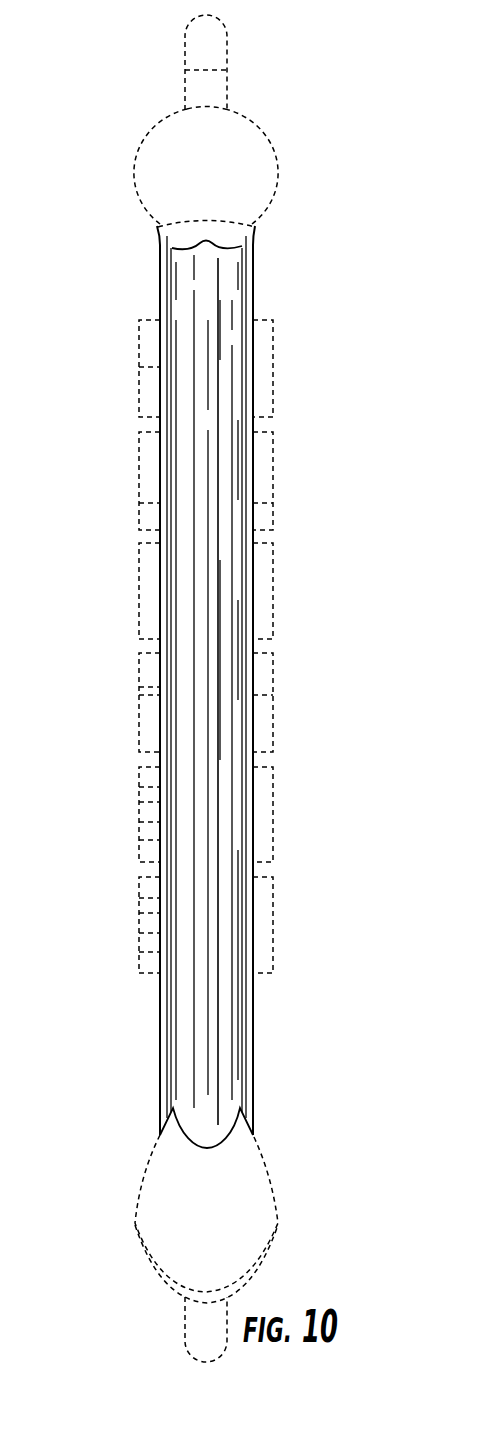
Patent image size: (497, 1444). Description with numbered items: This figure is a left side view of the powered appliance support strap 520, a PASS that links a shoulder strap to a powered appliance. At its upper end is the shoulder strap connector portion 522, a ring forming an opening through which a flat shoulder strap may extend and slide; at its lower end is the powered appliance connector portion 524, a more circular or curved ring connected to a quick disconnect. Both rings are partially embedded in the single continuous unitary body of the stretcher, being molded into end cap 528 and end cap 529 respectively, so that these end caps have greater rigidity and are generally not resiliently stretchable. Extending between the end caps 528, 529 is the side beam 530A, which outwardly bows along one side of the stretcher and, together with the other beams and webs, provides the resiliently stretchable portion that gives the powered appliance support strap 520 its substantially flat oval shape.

The powered appliance support strap 520 is at (112, 105).
The shoulder strap connector portion 522 is at (218, 55).
The powered appliance connector portion 524 is at (181, 1336).
The end cap 528 is at (268, 180).
The end cap 529 is at (272, 1200).
The beam 530A is at (219, 617).